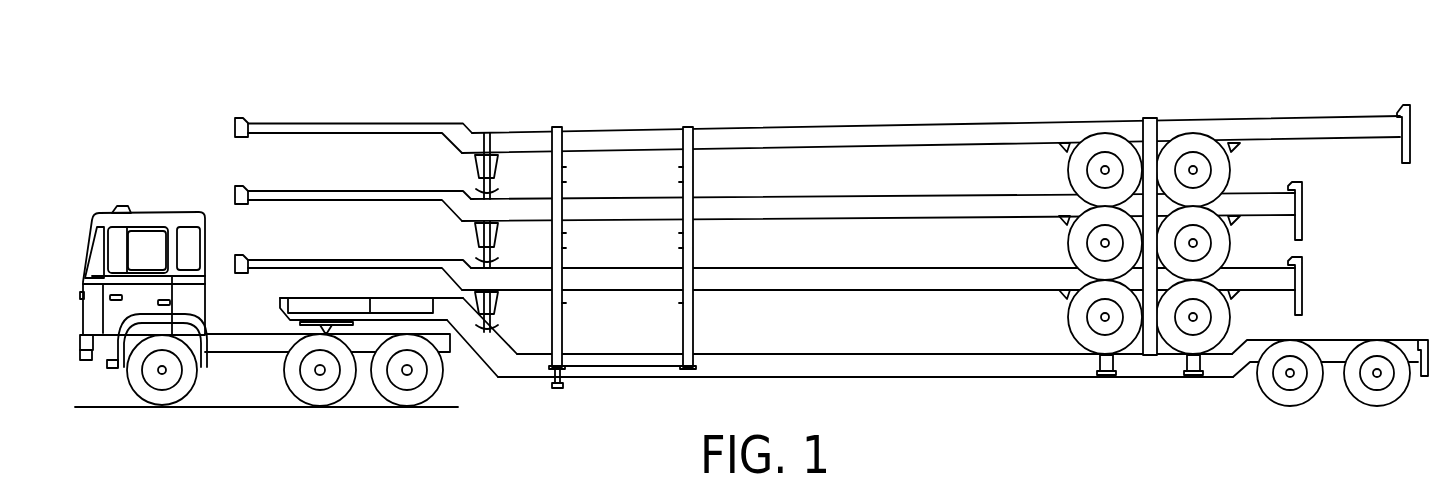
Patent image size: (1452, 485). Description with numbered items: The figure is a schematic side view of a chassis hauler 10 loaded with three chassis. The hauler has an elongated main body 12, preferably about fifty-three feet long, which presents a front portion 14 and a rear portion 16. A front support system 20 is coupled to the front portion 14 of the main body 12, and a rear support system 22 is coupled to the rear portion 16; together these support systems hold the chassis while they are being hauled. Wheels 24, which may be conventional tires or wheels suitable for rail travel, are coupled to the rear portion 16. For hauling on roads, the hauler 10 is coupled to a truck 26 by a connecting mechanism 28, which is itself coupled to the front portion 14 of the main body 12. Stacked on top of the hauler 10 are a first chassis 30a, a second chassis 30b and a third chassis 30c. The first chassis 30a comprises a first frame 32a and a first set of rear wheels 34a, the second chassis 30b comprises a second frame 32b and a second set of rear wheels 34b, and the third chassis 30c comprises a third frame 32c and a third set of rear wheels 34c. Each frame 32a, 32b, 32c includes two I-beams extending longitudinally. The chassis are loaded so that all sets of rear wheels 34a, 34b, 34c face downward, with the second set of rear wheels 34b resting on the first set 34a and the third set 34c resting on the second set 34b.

The chassis hauler 10 is at (824, 231).
The main body 12 is at (945, 363).
The front portion 14 is at (523, 402).
The rear portion 16 is at (1147, 402).
The front support system 20 is at (558, 95).
The rear support system 22 is at (1148, 95).
The wheels 24 is at (1380, 346).
The truck 26 is at (121, 207).
The connecting mechanism 28 is at (300, 323).
The first chassis 30a is at (385, 245).
The second chassis 30b is at (385, 177).
The third chassis 30c is at (385, 110).
The first frame 32a is at (945, 277).
The second frame 32b is at (945, 203).
The third frame 32c is at (945, 131).
The first set of rear wheels 34a is at (1222, 316).
The second set of rear wheels 34b is at (1222, 242).
The third set of rear wheels 34c is at (1222, 169).